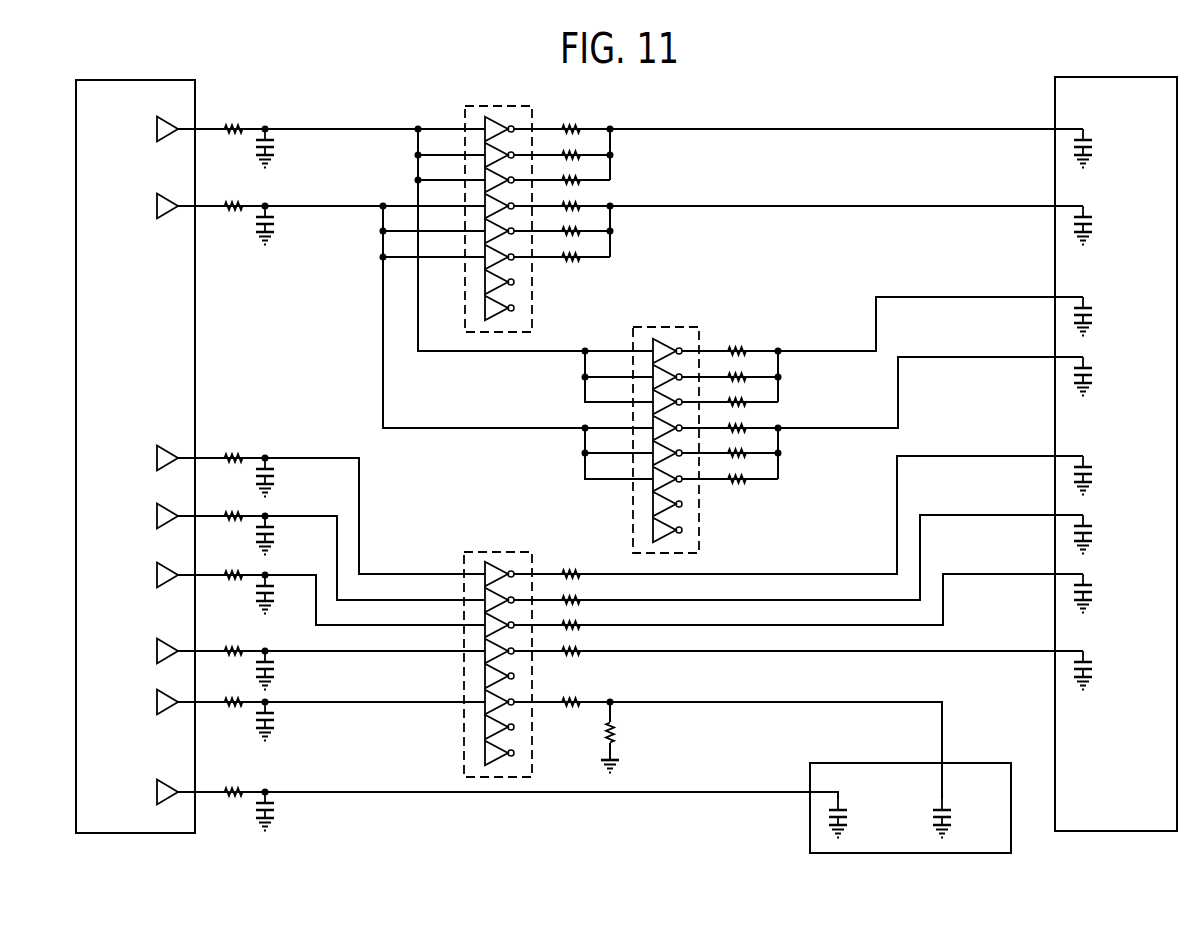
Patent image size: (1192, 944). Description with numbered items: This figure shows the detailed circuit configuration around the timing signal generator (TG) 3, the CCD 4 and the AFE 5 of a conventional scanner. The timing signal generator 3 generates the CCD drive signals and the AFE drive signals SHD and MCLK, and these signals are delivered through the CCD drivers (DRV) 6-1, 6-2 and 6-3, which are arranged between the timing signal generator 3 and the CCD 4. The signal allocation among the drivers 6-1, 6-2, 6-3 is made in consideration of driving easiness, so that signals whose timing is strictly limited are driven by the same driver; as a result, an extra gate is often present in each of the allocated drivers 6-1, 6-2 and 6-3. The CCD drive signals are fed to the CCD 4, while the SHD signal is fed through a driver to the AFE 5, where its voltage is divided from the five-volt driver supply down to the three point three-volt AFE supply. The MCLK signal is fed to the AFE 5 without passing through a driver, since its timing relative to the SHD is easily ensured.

The timing signal generator (TG) 3 is at (195, 99).
The CCD 4 is at (1055, 99).
The AFE 5 is at (982, 763).
The driver (DRV) 6-1 is at (534, 113).
The driver (DRV) 6-2 is at (702, 343).
The driver (DRV) 6-3 is at (534, 558).